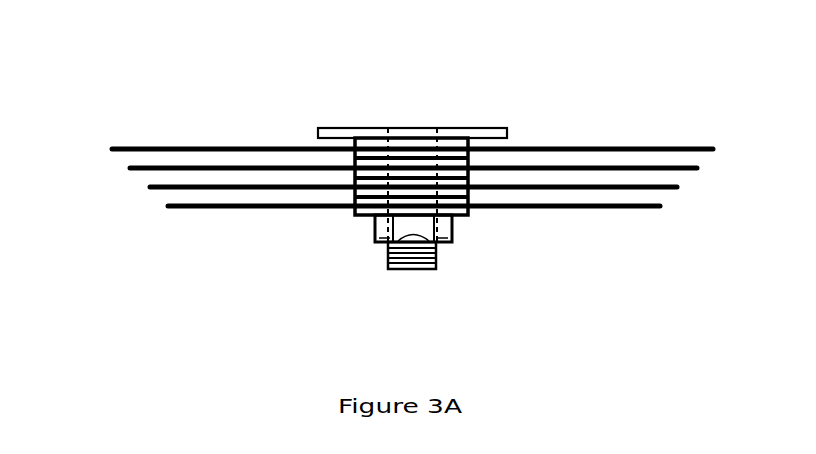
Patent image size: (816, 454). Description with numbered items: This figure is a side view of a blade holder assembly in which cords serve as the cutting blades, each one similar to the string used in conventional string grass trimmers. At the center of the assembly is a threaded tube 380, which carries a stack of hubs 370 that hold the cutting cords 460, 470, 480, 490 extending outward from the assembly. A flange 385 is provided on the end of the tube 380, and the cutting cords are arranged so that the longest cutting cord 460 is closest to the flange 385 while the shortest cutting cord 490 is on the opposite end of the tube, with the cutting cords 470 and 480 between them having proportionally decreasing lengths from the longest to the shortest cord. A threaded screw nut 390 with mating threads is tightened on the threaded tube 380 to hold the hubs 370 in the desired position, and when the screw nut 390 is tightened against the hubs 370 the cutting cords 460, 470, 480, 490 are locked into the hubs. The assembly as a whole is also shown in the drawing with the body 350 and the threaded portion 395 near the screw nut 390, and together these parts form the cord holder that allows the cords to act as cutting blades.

The stacked body / housing 350 is at (355, 215).
The hubs 370 is at (468, 212).
The tube 380 is at (437, 268).
The flange 385 is at (342, 127).
The screw nut 390 is at (452, 233).
The threads 395 is at (387, 263).
The cutting cord 460 is at (117, 150).
The cutting cord 470 is at (133, 169).
The cutting cord 480 is at (152, 188).
The cutting cord 490 is at (170, 207).